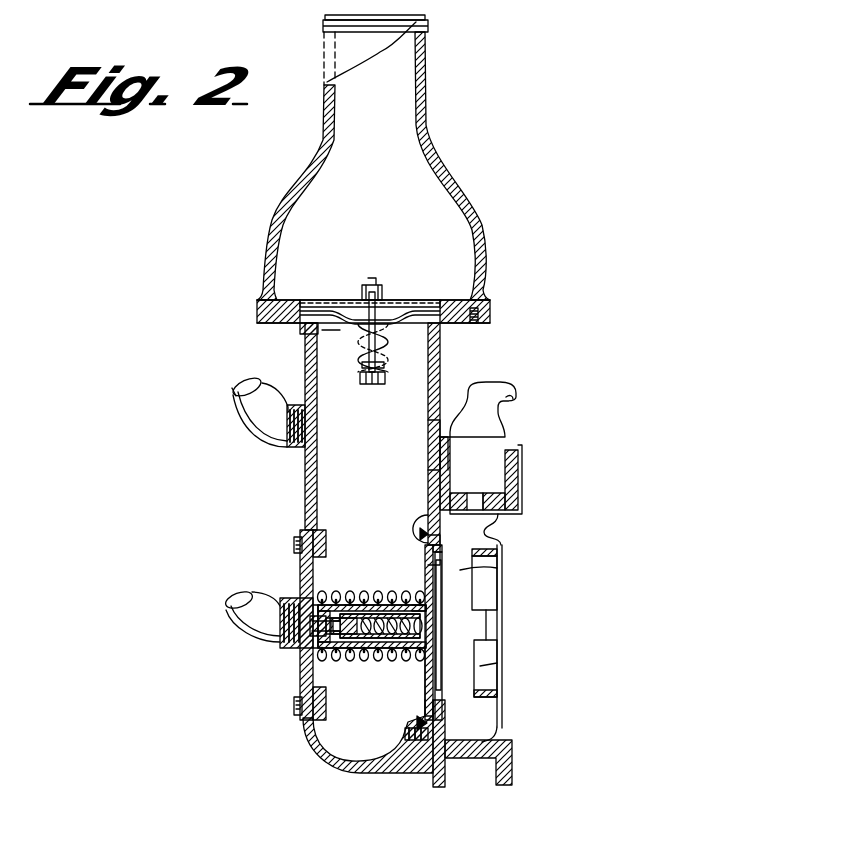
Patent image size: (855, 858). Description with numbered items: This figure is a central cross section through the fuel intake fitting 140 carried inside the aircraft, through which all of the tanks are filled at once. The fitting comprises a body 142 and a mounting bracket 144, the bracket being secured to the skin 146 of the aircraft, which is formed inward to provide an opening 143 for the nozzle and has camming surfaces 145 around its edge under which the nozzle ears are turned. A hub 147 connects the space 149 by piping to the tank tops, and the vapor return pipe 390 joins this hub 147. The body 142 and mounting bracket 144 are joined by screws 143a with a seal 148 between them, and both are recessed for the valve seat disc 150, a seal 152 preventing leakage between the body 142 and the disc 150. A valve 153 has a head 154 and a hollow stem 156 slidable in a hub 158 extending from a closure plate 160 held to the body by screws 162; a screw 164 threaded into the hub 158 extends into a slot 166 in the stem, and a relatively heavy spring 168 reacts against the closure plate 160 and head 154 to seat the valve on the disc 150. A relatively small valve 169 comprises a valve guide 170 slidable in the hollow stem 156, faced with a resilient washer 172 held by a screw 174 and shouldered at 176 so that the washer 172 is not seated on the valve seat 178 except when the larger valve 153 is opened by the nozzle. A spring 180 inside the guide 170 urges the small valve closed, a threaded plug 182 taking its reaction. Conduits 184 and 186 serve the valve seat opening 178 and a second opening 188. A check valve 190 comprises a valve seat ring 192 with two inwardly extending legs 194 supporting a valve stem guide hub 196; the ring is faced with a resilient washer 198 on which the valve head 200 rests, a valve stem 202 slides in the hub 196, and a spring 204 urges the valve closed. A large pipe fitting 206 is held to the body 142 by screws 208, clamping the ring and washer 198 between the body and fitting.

The large pipe fitting 206 is at (276, 257).
The valve head 200 is at (390, 290).
The washer 198 is at (445, 307).
The screws 208 is at (475, 331).
The inwardly extending legs 194 is at (346, 323).
The valve seat ring 192 is at (405, 322).
The valve stem guide hub 196 is at (380, 355).
The valve stem 202 is at (380, 366).
The check valve 190 is at (337, 356).
The spring 204 is at (377, 387).
The body 142 is at (441, 364).
The fuel intake fitting 140 is at (450, 405).
The vapor return pipe 390 is at (508, 392).
The second opening 188 is at (318, 432).
The conduit 186 is at (252, 443).
The hub 147 is at (428, 450).
The seal 148 is at (452, 492).
The valve seat disc 150 is at (428, 510).
The skin 146 is at (522, 507).
The seal 152 is at (426, 537).
The head 154 is at (426, 563).
The screw 164 is at (352, 590).
The space 149 is at (500, 558).
The valve seat 178 is at (300, 600).
The small valve 169 is at (326, 595).
The shoulder 176 is at (372, 592).
The threaded plug 182 is at (420, 592).
The slot 166 is at (420, 597).
The opening 143 is at (500, 596).
The spring 180 is at (443, 621).
The camming surfaces 145 is at (500, 667).
The conduit 184 is at (250, 632).
The screw 174 is at (300, 648).
The resilient washer 172 is at (318, 638).
The hub 158 is at (340, 652).
The spring 168 is at (370, 651).
The valve guide 170 is at (360, 657).
The hollow stem 156 is at (404, 665).
The closure plate 160 is at (325, 693).
The valve 153 is at (423, 700).
The screws 162 is at (296, 707).
The screws 143a is at (414, 734).
The mounting bracket 144 is at (438, 788).